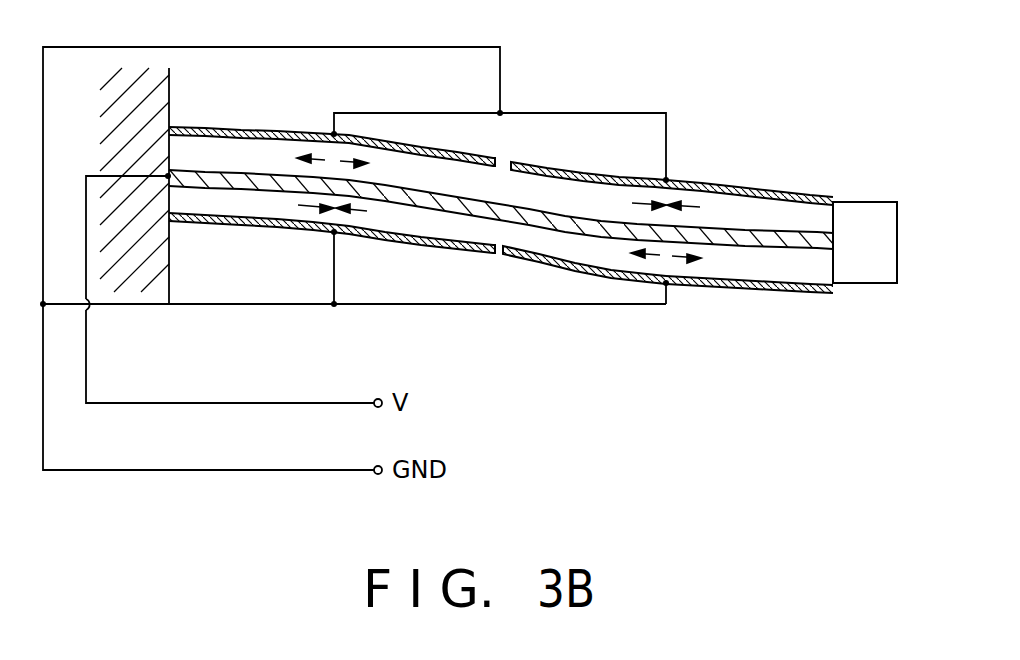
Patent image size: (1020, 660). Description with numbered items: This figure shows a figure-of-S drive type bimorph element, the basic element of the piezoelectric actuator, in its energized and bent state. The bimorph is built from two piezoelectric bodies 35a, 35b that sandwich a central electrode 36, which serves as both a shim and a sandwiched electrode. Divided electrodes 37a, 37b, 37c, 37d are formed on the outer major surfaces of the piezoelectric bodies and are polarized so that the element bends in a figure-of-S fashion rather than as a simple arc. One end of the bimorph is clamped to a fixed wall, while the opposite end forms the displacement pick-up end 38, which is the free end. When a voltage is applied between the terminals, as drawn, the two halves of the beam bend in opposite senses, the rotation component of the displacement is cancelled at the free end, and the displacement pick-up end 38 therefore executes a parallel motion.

The piezoelectric body 35a is at (544, 190).
The piezoelectric body 35b is at (510, 234).
The electrode serving as both a shim and a sandwiched electrode 36 is at (442, 201).
The divided electrode 37a is at (240, 128).
The divided electrode 37b is at (740, 187).
The divided electrode 37c is at (227, 225).
The divided electrode 37d is at (735, 293).
The displacement pick-up end 38 is at (865, 213).